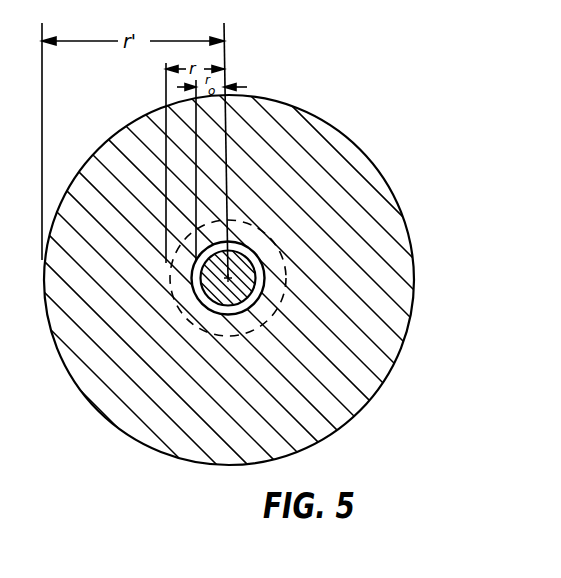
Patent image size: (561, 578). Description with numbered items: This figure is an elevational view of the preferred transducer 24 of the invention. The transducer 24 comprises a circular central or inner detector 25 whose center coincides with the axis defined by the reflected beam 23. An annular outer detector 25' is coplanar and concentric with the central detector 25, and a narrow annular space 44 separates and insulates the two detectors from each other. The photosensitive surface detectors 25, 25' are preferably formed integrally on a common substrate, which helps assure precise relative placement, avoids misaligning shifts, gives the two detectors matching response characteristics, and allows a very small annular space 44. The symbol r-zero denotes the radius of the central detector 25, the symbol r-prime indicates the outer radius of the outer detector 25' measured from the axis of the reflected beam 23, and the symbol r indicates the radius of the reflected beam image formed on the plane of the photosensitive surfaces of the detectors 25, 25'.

The reflected beam 23 is at (252, 253).
The transducer 24 is at (300, 104).
The central detector 25 is at (313, 257).
The outer detector 25' is at (228, 279).
The annular space 44 is at (207, 305).